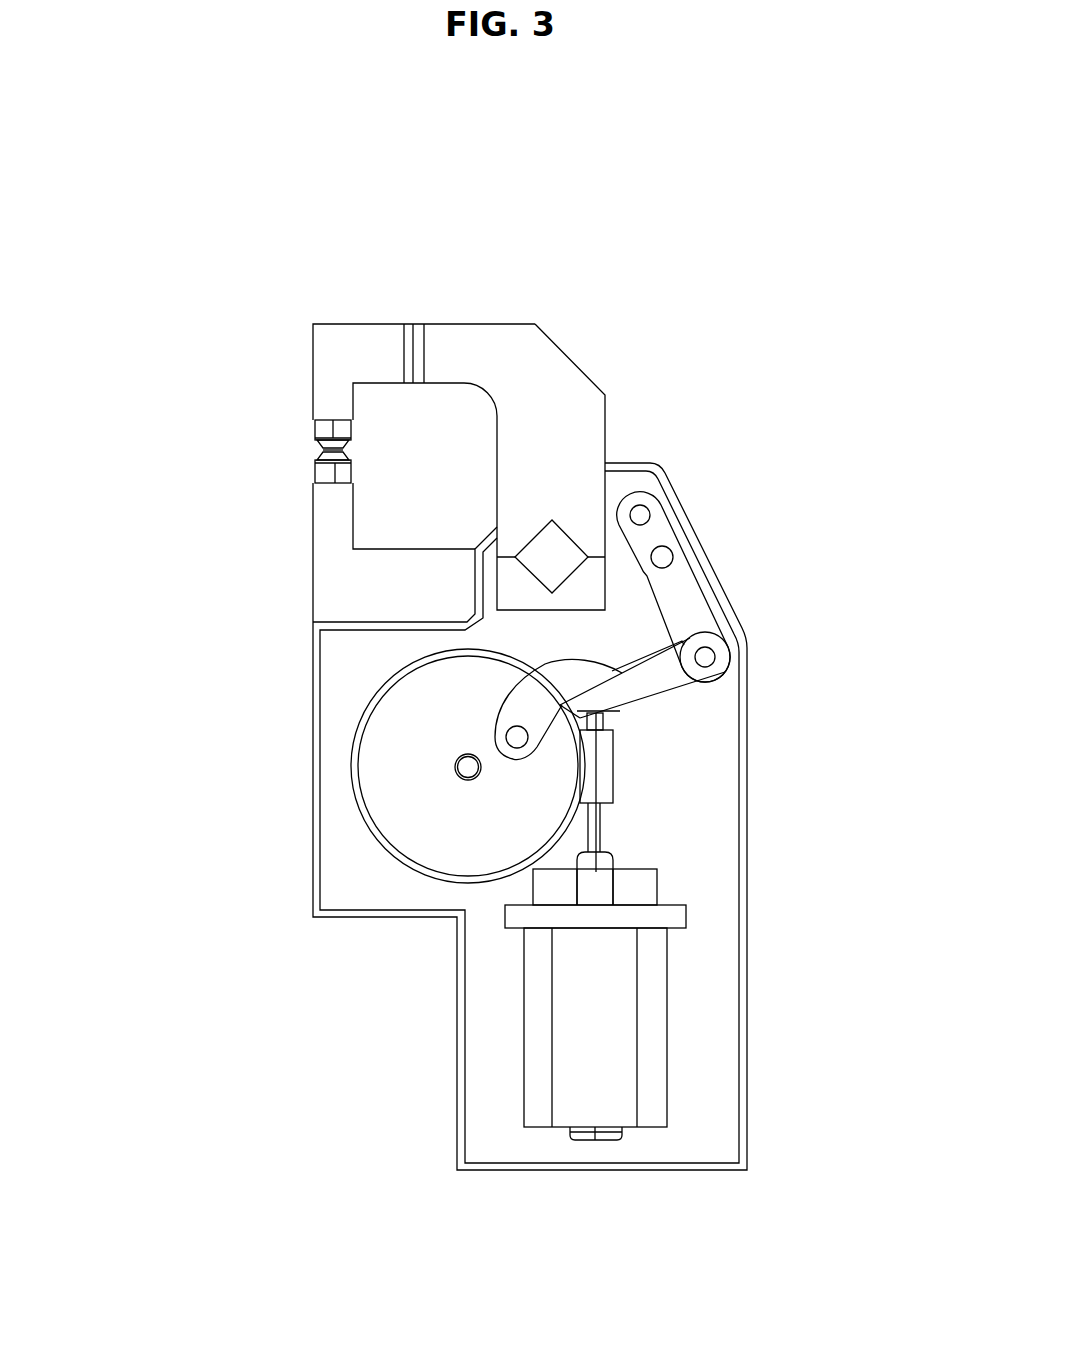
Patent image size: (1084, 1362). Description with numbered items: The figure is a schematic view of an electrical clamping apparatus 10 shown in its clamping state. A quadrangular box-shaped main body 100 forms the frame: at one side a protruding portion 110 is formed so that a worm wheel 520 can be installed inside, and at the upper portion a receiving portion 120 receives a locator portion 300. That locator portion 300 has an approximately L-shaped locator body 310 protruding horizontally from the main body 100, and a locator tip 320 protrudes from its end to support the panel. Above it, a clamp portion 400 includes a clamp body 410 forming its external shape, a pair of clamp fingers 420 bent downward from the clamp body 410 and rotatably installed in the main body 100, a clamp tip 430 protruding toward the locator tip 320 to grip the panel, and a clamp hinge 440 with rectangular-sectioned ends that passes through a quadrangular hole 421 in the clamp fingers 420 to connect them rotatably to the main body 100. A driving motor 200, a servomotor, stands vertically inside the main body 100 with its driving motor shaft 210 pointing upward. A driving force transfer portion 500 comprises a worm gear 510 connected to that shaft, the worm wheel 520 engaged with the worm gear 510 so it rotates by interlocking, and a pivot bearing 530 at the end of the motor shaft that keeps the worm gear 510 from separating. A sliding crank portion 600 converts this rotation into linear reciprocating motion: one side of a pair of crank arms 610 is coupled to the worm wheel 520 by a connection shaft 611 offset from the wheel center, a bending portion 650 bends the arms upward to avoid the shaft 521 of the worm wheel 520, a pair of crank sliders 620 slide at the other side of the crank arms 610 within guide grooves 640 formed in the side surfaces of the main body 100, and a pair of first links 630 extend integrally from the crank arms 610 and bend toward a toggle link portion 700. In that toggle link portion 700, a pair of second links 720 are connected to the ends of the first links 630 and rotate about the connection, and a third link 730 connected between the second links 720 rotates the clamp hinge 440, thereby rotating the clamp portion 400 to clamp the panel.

The electrical clamping apparatus 10 is at (220, 200).
The main body 100 is at (766, 995).
The protruding portion 110 is at (313, 683).
The receiving portion 120 is at (318, 620).
The driving motor 200 is at (647, 1040).
The driving motor shaft 210 is at (600, 826).
The locator portion 300 is at (185, 420).
The locator body 310 is at (322, 565).
The locator tip 320 is at (323, 473).
The clamp portion 400 is at (805, 255).
The clamp body 410 is at (387, 323).
The clamp finger 420 is at (491, 336).
The quadrangular hole 421 is at (570, 540).
The clamp tip 430 is at (322, 426).
The clamp hinge 440 is at (552, 540).
The driving force transfer portion 500 is at (188, 820).
The worm gear 510 is at (595, 785).
The worm wheel 520 is at (428, 840).
The shaft of the worm wheel 521 is at (468, 767).
The pivot bearing 530 is at (357, 792).
The sliding crank portion 600 is at (332, 1283).
The crank arm 610 is at (652, 687).
The connection shaft 611 is at (220, 845).
The crank slider 620 is at (730, 657).
The first link 630 is at (687, 585).
The guide groove 640 is at (653, 708).
The bending portion 650 is at (620, 670).
The toggle link portion 700 is at (805, 348).
The second link 720 is at (655, 530).
The third link 730 is at (615, 530).